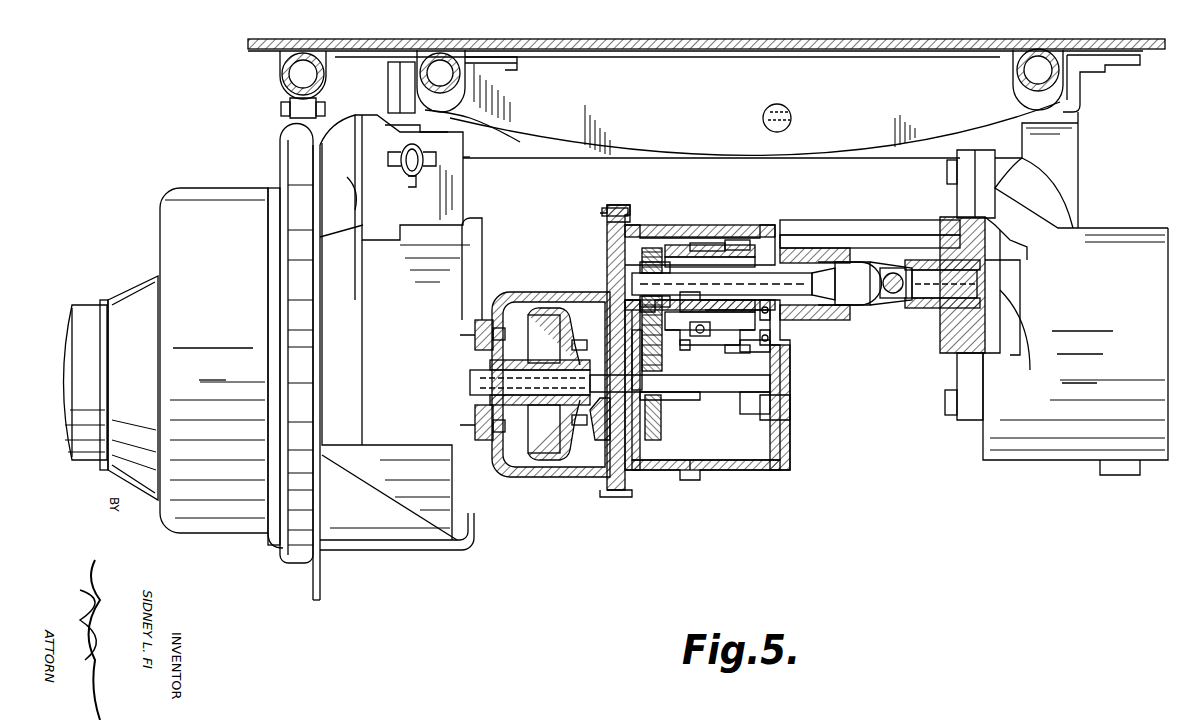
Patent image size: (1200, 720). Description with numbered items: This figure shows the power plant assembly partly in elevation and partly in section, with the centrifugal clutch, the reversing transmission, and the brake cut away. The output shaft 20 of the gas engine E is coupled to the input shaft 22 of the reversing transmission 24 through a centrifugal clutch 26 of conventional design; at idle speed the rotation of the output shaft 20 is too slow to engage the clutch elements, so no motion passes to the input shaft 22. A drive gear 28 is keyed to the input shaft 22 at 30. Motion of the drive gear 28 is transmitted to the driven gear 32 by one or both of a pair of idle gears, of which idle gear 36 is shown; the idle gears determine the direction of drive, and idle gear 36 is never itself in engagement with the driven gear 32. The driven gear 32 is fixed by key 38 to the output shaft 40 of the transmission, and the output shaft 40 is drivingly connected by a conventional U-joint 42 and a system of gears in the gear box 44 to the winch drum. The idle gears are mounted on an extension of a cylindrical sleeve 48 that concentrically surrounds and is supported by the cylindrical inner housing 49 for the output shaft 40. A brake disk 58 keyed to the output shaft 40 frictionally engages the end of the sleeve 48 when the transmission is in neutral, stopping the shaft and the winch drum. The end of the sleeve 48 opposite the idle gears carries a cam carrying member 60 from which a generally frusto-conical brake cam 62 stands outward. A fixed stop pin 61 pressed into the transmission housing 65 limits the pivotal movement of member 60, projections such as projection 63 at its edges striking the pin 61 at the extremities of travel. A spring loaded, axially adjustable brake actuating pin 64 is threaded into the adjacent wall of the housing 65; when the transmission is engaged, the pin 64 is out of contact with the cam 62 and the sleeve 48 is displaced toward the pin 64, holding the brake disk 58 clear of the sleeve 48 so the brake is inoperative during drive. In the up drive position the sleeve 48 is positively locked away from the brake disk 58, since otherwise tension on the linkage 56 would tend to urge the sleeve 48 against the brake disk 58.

The gas engine E is at (174, 368).
The output shaft 20 is at (480, 382).
The input shaft 22 is at (670, 398).
The reversing transmission 24 is at (678, 461).
The centrifugal clutch 26 is at (518, 464).
The drive gear 28 is at (654, 425).
The key 30 is at (600, 425).
The driven gear 32 is at (645, 262).
The idle gear 36 is at (648, 332).
The key 38 is at (622, 276).
The output shaft 40 is at (730, 267).
The U-joint 42 is at (885, 312).
The gear box 44 is at (1054, 293).
The cylindrical sleeve 48 is at (705, 252).
The cylindrical inner housing 49 is at (747, 252).
The linkage 56 is at (687, 344).
The brake disk 58 is at (672, 248).
The cam carrying member 60 is at (740, 325).
The fixed stop pin 61 is at (726, 348).
The brake cam 62 is at (772, 326).
The projection 63 is at (730, 400).
The brake actuating pin 64 is at (772, 345).
The transmission housing 65 is at (762, 428).